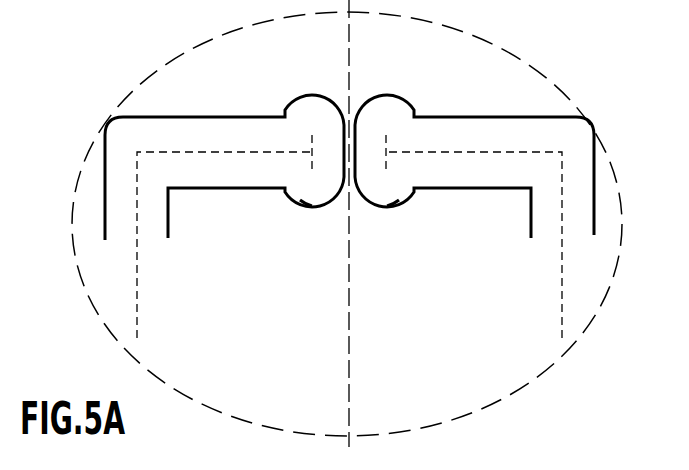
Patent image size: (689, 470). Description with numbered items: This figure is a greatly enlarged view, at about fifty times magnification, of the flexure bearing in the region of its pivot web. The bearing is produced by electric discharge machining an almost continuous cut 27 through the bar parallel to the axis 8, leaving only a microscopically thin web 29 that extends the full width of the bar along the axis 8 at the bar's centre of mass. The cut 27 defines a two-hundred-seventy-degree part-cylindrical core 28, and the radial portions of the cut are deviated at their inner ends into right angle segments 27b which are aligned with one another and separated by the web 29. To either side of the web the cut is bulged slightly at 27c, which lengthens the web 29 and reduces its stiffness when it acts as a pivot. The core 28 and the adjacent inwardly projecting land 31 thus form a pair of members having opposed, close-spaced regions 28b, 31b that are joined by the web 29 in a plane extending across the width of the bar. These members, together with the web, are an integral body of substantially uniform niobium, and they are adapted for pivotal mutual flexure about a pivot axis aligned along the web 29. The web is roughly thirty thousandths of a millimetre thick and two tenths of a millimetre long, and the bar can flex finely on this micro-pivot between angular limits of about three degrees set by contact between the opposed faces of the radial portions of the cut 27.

The cut 27 is at (147, 112).
The right angle segments 27b is at (512, 117).
The bulges of the cut 27c is at (305, 197).
The part-cylindrical core 28 is at (285, 72).
The close-spaced region of the core 28b is at (345, 100).
The axis 8 is at (352, 158).
The web 29 is at (345, 147).
The land 31 is at (290, 267).
The close-spaced region of the land 31b is at (352, 200).